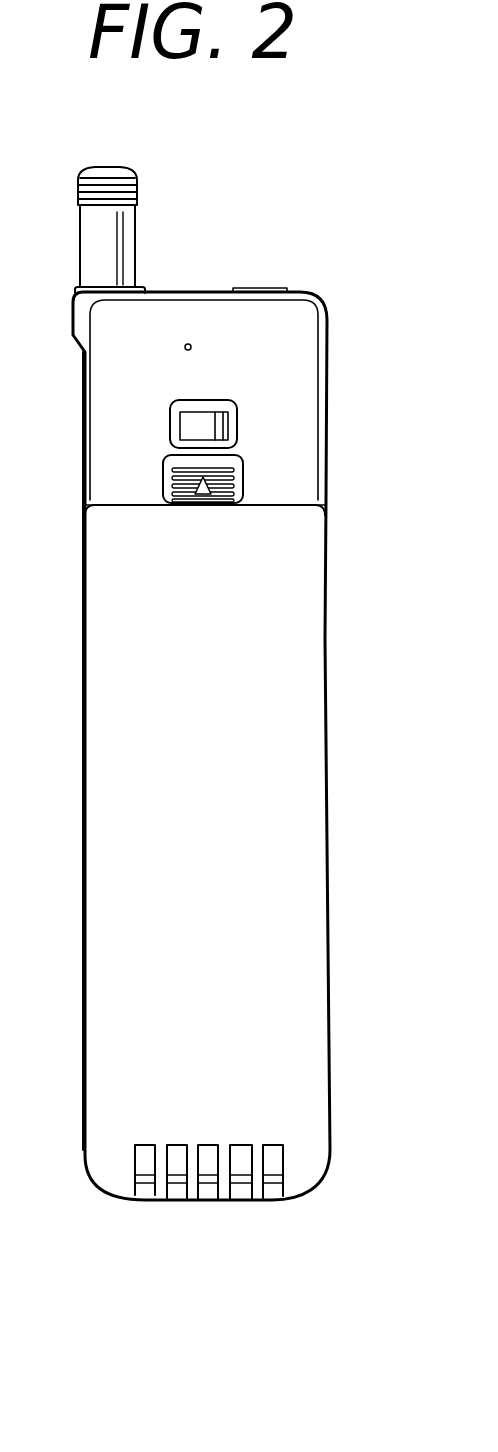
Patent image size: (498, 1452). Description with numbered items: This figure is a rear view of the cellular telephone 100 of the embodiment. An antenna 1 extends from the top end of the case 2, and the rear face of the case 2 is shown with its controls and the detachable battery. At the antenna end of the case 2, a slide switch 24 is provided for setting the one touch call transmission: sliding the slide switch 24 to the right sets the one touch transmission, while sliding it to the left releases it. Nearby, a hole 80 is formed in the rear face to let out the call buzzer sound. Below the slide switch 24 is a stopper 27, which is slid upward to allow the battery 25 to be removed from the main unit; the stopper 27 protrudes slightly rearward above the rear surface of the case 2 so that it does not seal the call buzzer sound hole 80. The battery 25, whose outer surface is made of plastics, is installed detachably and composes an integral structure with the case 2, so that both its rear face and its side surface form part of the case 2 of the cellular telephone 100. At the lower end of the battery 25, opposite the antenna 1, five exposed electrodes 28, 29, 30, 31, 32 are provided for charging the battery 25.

The antenna 1 is at (107, 227).
The case 2 is at (103, 450).
The slide switch 24 is at (237, 414).
The battery 25 is at (285, 792).
The stopper 27 is at (243, 487).
The exposed electrode 28 is at (146, 1194).
The exposed electrode 29 is at (174, 1197).
The exposed electrode 30 is at (211, 1199).
The exposed electrode 31 is at (240, 1196).
The exposed electrode 32 is at (275, 1191).
The hole 80 is at (189, 343).
The cellular telephone 100 is at (326, 636).